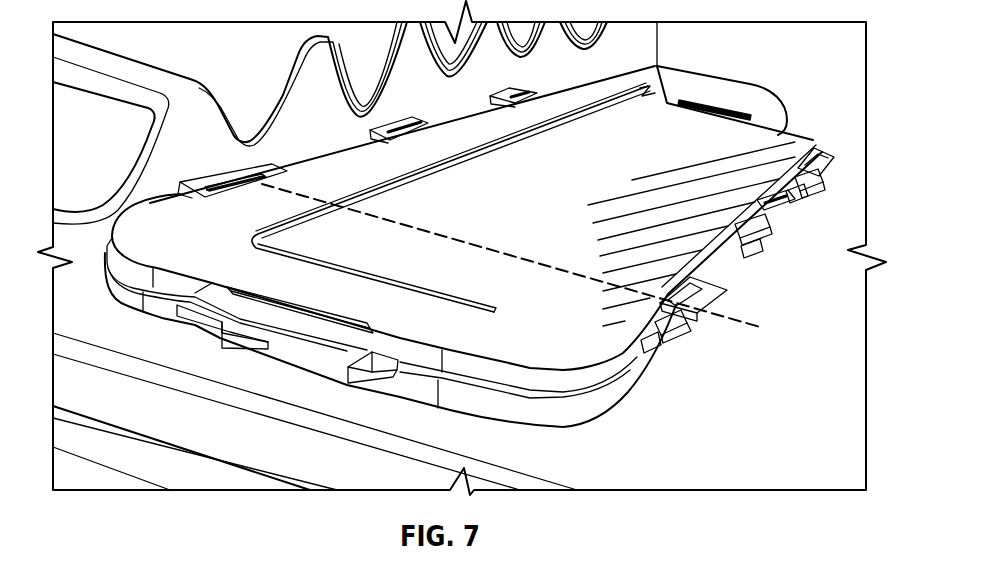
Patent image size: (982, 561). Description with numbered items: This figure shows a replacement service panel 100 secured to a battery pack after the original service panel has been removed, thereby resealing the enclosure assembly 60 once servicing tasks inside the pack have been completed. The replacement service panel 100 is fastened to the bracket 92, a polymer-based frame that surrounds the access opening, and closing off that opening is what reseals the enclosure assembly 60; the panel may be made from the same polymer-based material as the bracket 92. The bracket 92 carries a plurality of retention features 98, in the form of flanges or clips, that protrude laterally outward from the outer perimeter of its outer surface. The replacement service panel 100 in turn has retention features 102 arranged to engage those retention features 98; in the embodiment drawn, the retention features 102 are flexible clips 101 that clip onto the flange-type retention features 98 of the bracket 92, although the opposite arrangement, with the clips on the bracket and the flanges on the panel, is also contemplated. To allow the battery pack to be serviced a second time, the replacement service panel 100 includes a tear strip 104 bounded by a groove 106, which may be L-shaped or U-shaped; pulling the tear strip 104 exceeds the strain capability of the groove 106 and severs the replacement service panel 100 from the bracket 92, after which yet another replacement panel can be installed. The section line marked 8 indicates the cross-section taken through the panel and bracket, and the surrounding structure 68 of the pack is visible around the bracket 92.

The section line 8- 8 is at (198, 169).
The enclosure assembly 60 is at (752, 88).
The base 68 is at (853, 214).
The bracket 92 is at (573, 410).
The retention features 98 is at (797, 188).
The replacement service panel 100 is at (693, 137).
The flexible clips 101 is at (817, 182).
The retention features 102 is at (181, 178).
The tear strip 104 is at (468, 140).
The groove 106 is at (520, 140).